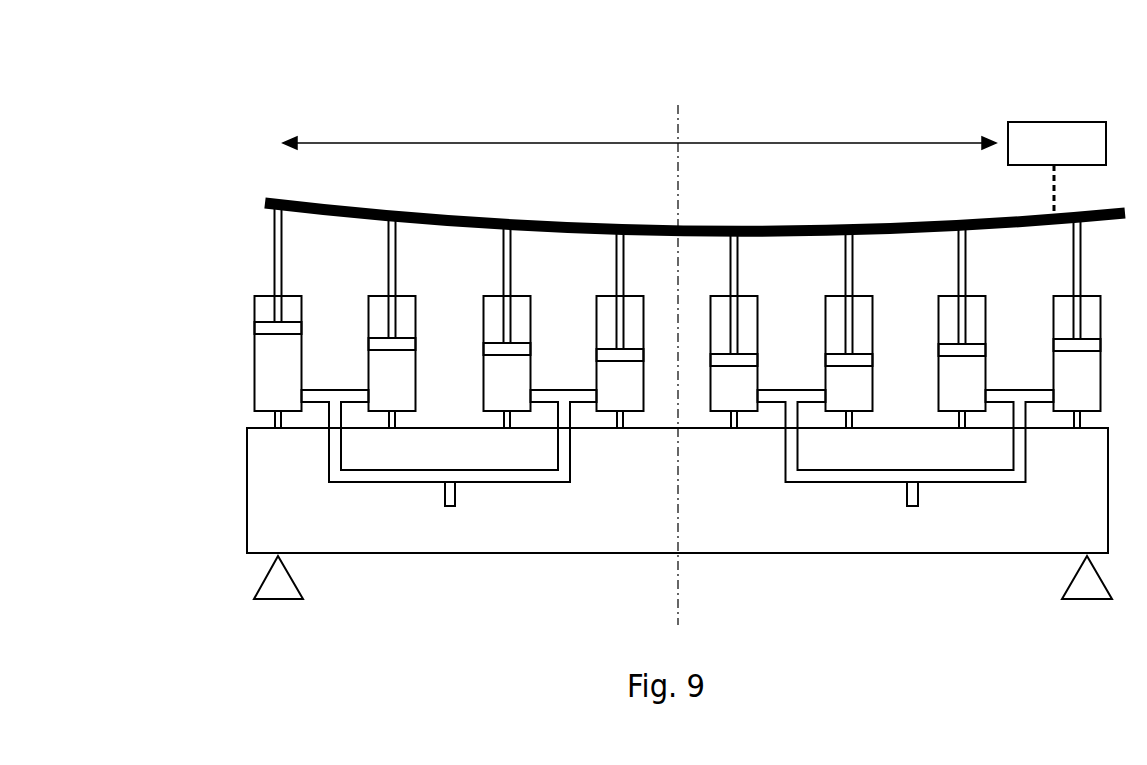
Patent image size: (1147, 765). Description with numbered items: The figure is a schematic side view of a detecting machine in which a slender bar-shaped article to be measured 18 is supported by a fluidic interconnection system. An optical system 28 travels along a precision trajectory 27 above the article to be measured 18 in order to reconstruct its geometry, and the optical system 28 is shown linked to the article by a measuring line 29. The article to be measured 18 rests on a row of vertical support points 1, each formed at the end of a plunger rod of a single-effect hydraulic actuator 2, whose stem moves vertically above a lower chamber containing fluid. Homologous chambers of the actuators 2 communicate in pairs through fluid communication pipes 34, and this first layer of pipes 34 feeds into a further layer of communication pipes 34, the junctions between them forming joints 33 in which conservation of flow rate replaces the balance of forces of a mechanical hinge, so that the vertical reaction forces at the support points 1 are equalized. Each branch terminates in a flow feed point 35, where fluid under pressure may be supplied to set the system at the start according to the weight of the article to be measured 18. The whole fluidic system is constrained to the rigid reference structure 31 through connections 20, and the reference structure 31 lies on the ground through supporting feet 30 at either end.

The article to be measured 18 is at (268, 189).
The support point 1 is at (268, 265).
The single-effect hydraulic actuator 2 is at (276, 380).
The fluid communication pipe 34 is at (349, 386).
The joint 33 is at (324, 413).
The flow feed point 35 is at (437, 496).
The reference structure 31 is at (784, 540).
The connection 20 is at (266, 426).
The supporting foot 30 is at (249, 580).
The precision trajectory 27 is at (626, 137).
The optical system 28 is at (1060, 118).
The signal line 29 is at (1043, 175).